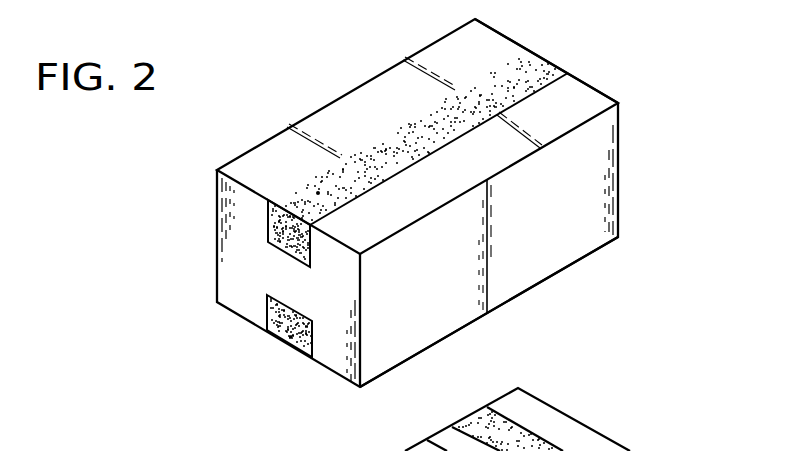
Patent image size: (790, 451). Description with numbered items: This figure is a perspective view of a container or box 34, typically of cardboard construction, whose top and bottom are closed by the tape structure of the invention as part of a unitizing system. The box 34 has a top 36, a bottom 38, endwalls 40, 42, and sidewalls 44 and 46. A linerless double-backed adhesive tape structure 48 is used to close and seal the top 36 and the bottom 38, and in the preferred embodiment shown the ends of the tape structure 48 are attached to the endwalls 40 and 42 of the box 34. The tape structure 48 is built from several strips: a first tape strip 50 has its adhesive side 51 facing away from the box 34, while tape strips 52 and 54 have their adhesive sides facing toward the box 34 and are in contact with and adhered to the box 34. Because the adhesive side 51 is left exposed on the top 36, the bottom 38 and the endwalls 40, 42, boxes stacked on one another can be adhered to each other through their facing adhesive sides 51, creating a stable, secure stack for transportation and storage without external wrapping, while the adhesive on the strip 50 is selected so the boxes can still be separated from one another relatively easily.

The box 34 is at (623, 178).
The top 36 is at (390, 116).
The bottom 38 is at (400, 368).
The endwall 40 is at (236, 284).
The endwall 42 is at (597, 87).
The sidewall 44 is at (555, 250).
The sidewall 46 is at (310, 115).
The tape structure 48 is at (287, 190).
The first tape strip 50 is at (290, 247).
The adhesive side 51 is at (318, 193).
The tape strip 52 is at (525, 51).
The tape strip 54 is at (558, 75).